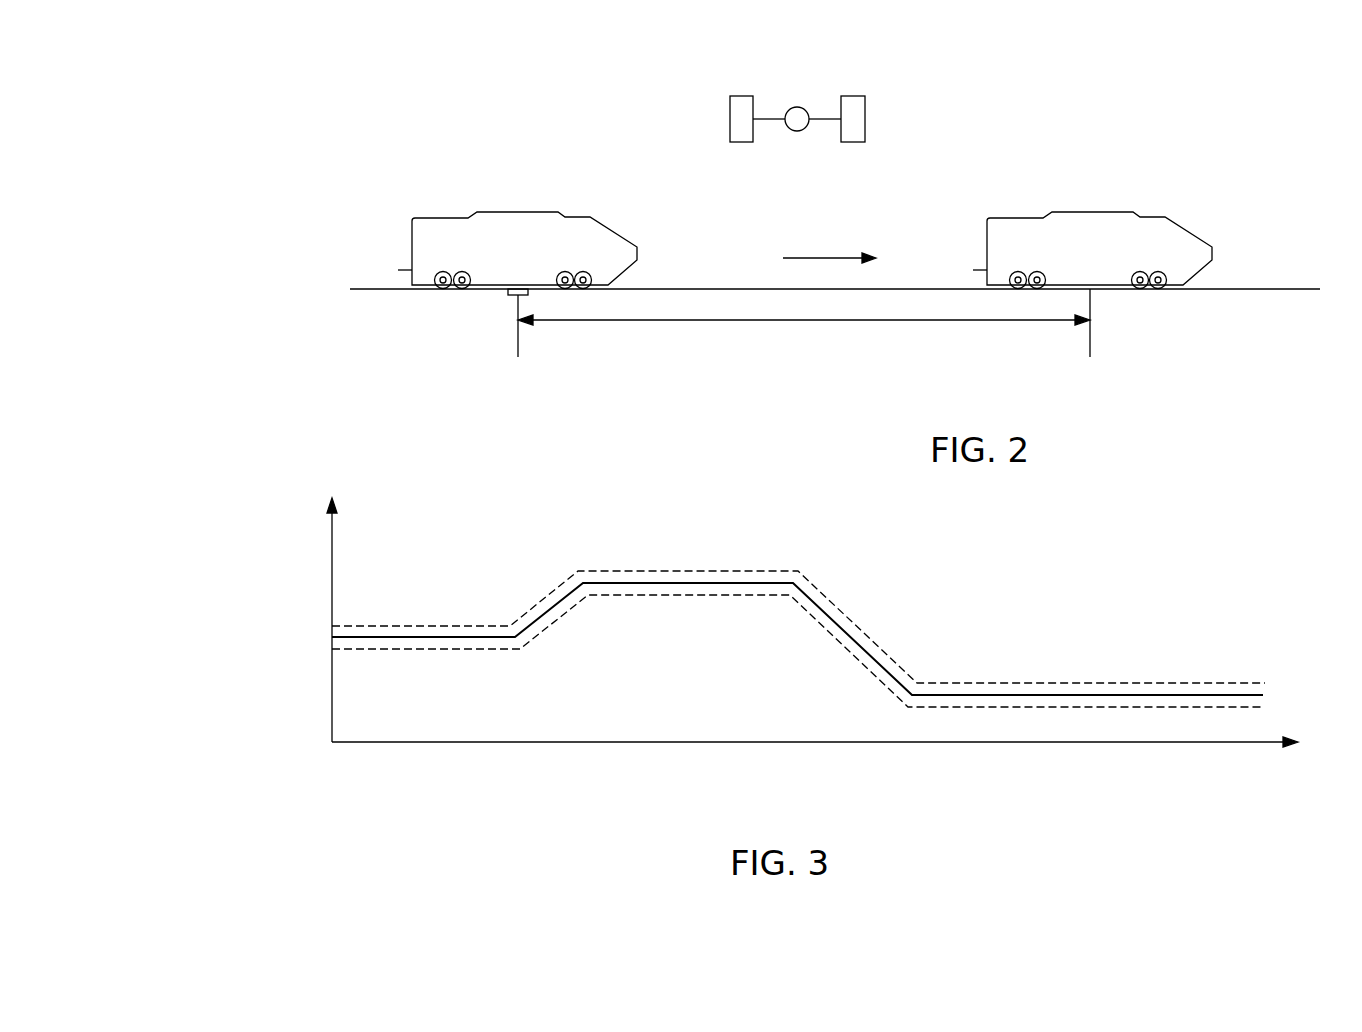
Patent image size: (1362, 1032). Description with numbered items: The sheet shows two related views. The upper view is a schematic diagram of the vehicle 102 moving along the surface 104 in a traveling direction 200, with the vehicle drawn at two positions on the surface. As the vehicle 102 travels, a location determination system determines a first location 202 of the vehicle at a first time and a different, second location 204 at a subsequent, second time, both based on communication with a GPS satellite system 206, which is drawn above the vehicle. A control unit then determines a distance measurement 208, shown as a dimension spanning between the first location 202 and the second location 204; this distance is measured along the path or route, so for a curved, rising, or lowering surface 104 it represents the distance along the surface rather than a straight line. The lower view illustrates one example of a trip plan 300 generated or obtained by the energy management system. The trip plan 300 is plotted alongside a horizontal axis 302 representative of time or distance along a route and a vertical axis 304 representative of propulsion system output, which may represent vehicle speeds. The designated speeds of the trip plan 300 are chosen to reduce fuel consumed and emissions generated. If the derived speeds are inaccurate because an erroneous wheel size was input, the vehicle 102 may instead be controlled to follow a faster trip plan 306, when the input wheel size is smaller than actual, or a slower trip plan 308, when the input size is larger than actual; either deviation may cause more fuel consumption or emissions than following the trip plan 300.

In FIG. 2, the vehicle 102 is at (525, 212).
In FIG. 2, the surface 104 is at (1264, 290).
In FIG. 2, the traveling direction 200 is at (824, 257).
In FIG. 2, the first location 202 is at (518, 341).
In FIG. 2, the second location 204 is at (1090, 341).
In FIG. 2, the GPS satellite system 206 is at (889, 127).
In FIG. 2, the distance measurement 208 is at (805, 321).
In FIG. 3, the trip plan 300 is at (1252, 695).
In FIG. 3, the horizontal axis 302 is at (1138, 743).
In FIG. 3, the vertical axis 304 is at (332, 558).
In FIG. 3, the faster trip plan 306 is at (1210, 683).
In FIG. 3, the slower trip plan 308 is at (1210, 707).